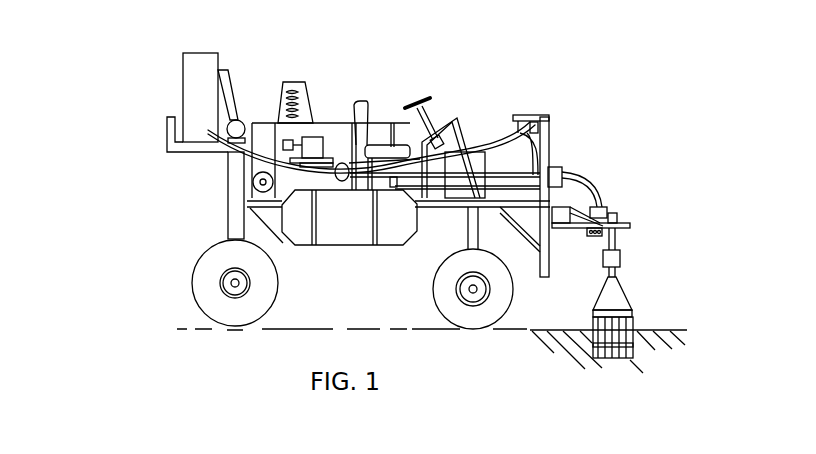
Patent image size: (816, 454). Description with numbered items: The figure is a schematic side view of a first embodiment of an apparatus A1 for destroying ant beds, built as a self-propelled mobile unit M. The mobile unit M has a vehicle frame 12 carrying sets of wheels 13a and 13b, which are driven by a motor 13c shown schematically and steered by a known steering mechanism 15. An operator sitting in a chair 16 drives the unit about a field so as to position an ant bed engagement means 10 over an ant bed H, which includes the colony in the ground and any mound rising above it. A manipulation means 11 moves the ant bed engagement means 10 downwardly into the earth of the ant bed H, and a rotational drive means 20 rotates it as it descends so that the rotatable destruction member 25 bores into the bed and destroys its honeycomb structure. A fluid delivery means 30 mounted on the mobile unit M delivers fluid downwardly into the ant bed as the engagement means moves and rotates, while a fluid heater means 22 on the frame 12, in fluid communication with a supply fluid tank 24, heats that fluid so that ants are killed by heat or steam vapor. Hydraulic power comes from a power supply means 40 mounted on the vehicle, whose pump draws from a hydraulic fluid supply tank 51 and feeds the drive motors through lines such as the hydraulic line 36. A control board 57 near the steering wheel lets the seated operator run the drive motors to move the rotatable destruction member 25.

The apparatus A1 is at (175, 205).
The mobile unit M is at (174, 109).
The hydraulic fluid supply tank 51 is at (199, 52).
The fluid heater means 22 is at (283, 82).
The supply fluid tank 24 is at (320, 122).
The chair 16 is at (363, 107).
The fluid delivery means 30 is at (382, 107).
The steering mechanism 15 is at (428, 98).
The control board 57 is at (467, 100).
The motor 13c is at (470, 142).
The manipulation means 11 is at (555, 162).
The hydraulic line 36 is at (588, 177).
The rotational drive means 20 is at (613, 200).
The ant bed engagement means 10 is at (642, 283).
The rotatable destruction member 25 is at (630, 295).
The ant bed H is at (637, 327).
The vehicle frame 12 is at (216, 195).
The wheels 13a is at (197, 263).
The wheels 13b is at (437, 280).
The power supply means 40 is at (342, 183).